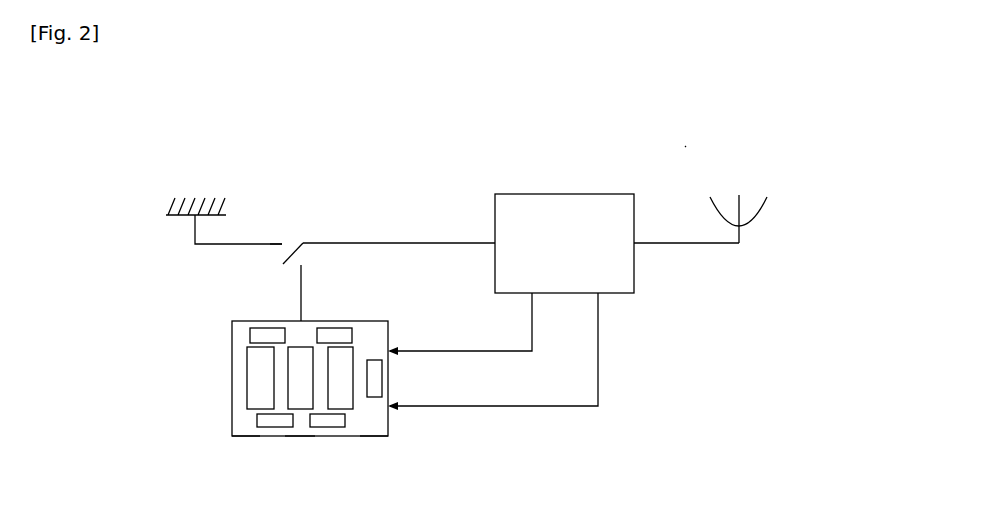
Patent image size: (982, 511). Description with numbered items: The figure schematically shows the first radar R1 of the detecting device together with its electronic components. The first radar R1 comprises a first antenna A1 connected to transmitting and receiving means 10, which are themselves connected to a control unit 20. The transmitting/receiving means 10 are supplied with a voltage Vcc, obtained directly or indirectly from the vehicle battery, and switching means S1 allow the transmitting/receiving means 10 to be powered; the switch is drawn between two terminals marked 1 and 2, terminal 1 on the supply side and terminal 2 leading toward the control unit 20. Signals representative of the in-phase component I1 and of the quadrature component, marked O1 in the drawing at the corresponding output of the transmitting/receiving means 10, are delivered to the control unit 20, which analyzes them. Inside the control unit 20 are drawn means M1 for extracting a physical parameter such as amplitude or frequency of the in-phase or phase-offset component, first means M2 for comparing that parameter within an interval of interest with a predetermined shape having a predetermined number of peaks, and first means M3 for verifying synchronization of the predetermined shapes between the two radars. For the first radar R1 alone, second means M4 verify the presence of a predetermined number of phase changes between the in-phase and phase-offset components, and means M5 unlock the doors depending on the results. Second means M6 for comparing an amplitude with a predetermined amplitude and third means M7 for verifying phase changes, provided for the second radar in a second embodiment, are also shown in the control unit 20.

The transmitting and receiving means 10 is at (563, 194).
The control unit 20 is at (232, 386).
The switching means S1 is at (303, 228).
The first radar R1 is at (690, 142).
The first antenna A1 is at (739, 230).
The means for extracting at least one physical parameter M1 is at (378, 436).
The first means for comparing M2 is at (299, 436).
The first means for verifying a synchronization M3 is at (243, 436).
The second means for verifying changes of phase M4 is at (268, 321).
The means for unlocking doors M5 is at (335, 321).
The second means for comparing an amplitude M6 is at (280, 436).
The third means for verifying changes of phase M7 is at (323, 436).
The voltage Vcc is at (198, 217).
The in-phase component I1 is at (460, 324).
The output terminal O1 is at (505, 351).
The switch terminal 1 is at (273, 232).
The switch terminal 2 is at (308, 293).